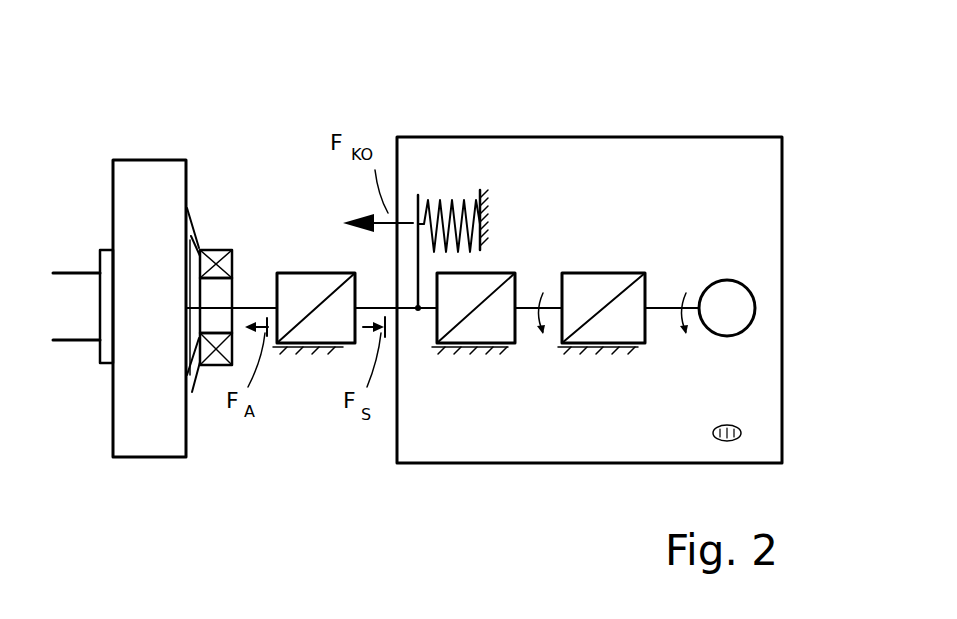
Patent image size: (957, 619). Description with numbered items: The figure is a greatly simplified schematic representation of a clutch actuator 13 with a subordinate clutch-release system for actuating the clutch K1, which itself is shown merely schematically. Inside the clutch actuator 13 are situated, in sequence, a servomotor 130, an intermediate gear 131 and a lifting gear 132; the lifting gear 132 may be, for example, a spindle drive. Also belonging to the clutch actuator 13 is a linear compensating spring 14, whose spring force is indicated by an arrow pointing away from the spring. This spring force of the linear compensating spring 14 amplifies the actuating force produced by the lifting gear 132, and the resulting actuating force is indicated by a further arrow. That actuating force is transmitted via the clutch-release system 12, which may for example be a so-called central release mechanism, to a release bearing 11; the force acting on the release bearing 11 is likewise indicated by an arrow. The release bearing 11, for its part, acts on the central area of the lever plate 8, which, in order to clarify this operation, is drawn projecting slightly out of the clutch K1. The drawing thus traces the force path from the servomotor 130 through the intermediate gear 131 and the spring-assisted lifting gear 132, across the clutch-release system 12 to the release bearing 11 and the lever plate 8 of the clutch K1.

The clutch K1 is at (193, 138).
The lever plate 8 is at (200, 372).
The release bearing 11 is at (216, 252).
The clutch-release system 12 is at (303, 283).
The clutch actuator 13 is at (603, 102).
The linear compensating spring 14 is at (447, 207).
The servomotor 130 is at (728, 297).
The intermediate gear 131 is at (592, 288).
The lifting gear 132 is at (490, 330).